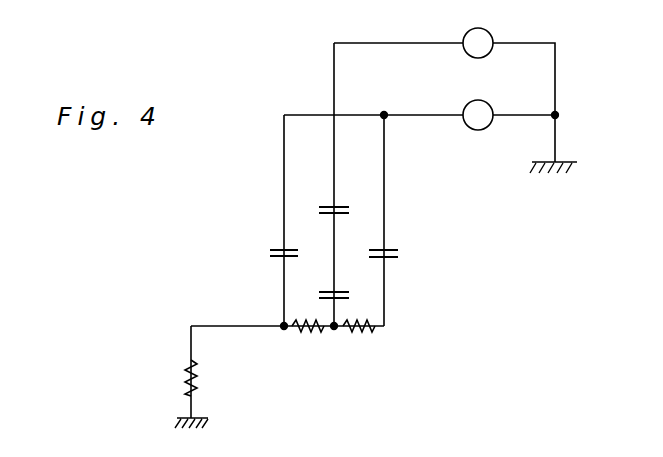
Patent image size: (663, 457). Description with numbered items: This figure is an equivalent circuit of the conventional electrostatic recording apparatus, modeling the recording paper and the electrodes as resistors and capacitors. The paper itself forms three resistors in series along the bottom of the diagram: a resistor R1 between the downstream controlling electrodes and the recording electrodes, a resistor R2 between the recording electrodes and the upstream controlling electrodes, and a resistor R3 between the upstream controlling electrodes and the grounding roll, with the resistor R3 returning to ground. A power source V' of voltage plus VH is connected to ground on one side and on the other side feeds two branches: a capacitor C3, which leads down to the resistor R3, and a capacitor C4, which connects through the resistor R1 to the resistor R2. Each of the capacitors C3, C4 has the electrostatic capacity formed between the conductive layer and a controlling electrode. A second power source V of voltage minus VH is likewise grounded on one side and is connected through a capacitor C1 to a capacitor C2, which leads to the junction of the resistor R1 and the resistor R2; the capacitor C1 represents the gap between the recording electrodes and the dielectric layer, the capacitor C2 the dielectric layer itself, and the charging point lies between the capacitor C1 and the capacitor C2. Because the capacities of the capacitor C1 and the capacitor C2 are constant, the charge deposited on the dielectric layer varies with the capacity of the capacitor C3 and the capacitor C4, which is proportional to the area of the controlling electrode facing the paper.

The power source V is at (478, 29).
The power source V' is at (478, 102).
The capacitor C1 is at (344, 195).
The capacitor C2 is at (344, 283).
The capacitor C3 is at (258, 250).
The capacitor C4 is at (399, 250).
The resistor R1 is at (363, 341).
The resistor R2 is at (307, 341).
The resistor R3 is at (207, 378).